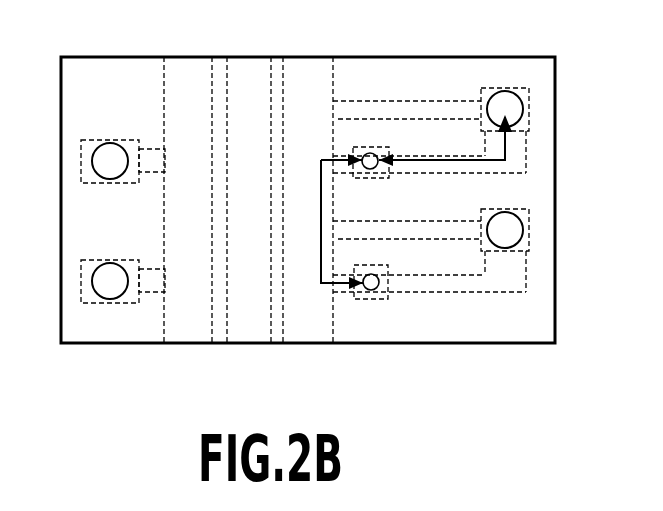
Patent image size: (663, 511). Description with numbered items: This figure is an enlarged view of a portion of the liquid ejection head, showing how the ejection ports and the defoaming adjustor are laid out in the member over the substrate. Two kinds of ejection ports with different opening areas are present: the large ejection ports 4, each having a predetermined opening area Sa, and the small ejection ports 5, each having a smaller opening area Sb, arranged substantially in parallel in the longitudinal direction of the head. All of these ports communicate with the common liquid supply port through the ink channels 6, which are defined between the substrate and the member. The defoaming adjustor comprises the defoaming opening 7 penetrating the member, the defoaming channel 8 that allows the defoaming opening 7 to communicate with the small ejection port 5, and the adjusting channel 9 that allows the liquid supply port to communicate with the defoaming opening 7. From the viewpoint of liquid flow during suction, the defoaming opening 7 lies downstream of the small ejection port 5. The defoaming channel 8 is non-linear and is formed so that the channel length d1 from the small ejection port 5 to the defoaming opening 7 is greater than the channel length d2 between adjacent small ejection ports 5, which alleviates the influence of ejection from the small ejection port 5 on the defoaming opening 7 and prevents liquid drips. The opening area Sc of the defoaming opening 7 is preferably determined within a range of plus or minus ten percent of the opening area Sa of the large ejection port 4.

The large ejection port 4 is at (98, 150).
The small ejection port 5 is at (370, 152).
The ink channel 6 is at (147, 148).
The defoaming opening 7 is at (516, 98).
The defoaming channel 8 is at (472, 293).
The adjusting channel 9 is at (458, 221).
The channel length from small ejection port to defoaming opening d1 is at (441, 158).
The channel length between adjacent small ejection ports d2 is at (314, 265).
The opening area of large ejection port Sa is at (112, 285).
The opening area of small ejection port Sb is at (376, 289).
The opening area of defoaming opening Sc is at (518, 115).